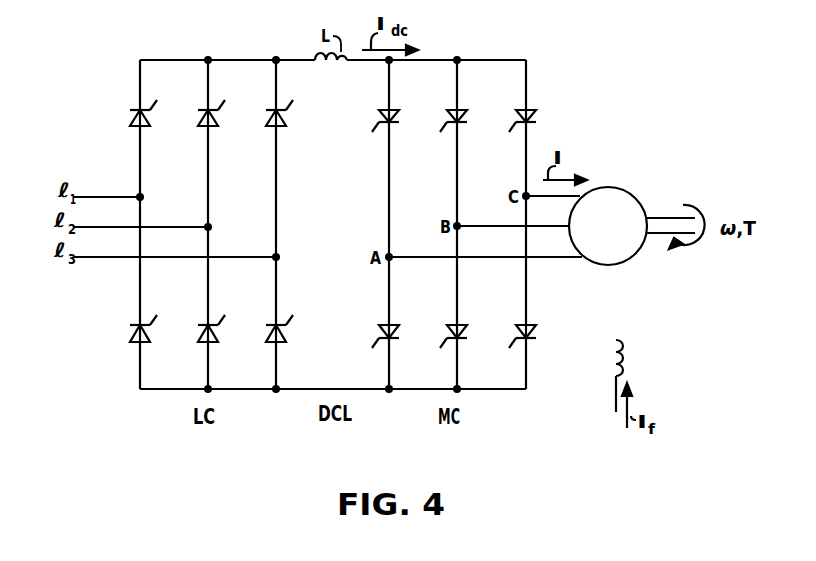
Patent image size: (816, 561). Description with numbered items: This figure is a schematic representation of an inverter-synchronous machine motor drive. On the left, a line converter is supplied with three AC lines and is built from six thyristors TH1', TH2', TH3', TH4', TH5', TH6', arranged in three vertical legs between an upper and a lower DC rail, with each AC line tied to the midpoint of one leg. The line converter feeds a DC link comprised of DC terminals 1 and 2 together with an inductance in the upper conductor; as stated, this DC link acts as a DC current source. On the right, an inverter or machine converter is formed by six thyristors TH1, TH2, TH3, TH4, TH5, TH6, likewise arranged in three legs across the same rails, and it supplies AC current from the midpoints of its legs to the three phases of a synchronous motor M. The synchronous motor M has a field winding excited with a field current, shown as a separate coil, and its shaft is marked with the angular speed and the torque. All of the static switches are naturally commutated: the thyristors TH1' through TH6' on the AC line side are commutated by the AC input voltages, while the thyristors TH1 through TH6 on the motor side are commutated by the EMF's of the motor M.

The DC terminal 1 is at (362, 63).
The DC terminal 2 is at (376, 389).
The synchronous motor M is at (637, 226).
The thyristor TH1 is at (373, 106).
The thyristor TH2 is at (469, 347).
The thyristor TH3 is at (466, 106).
The thyristor TH4 is at (543, 344).
The thyristor TH5 is at (539, 106).
The thyristor TH6 is at (401, 347).
The thyristor TH1' is at (121, 342).
The thyristor TH2' is at (193, 104).
The thyristor TH3' is at (192, 342).
The thyristor TH4' is at (262, 104).
The thyristor TH5' is at (261, 342).
The thyristor TH6' is at (122, 104).